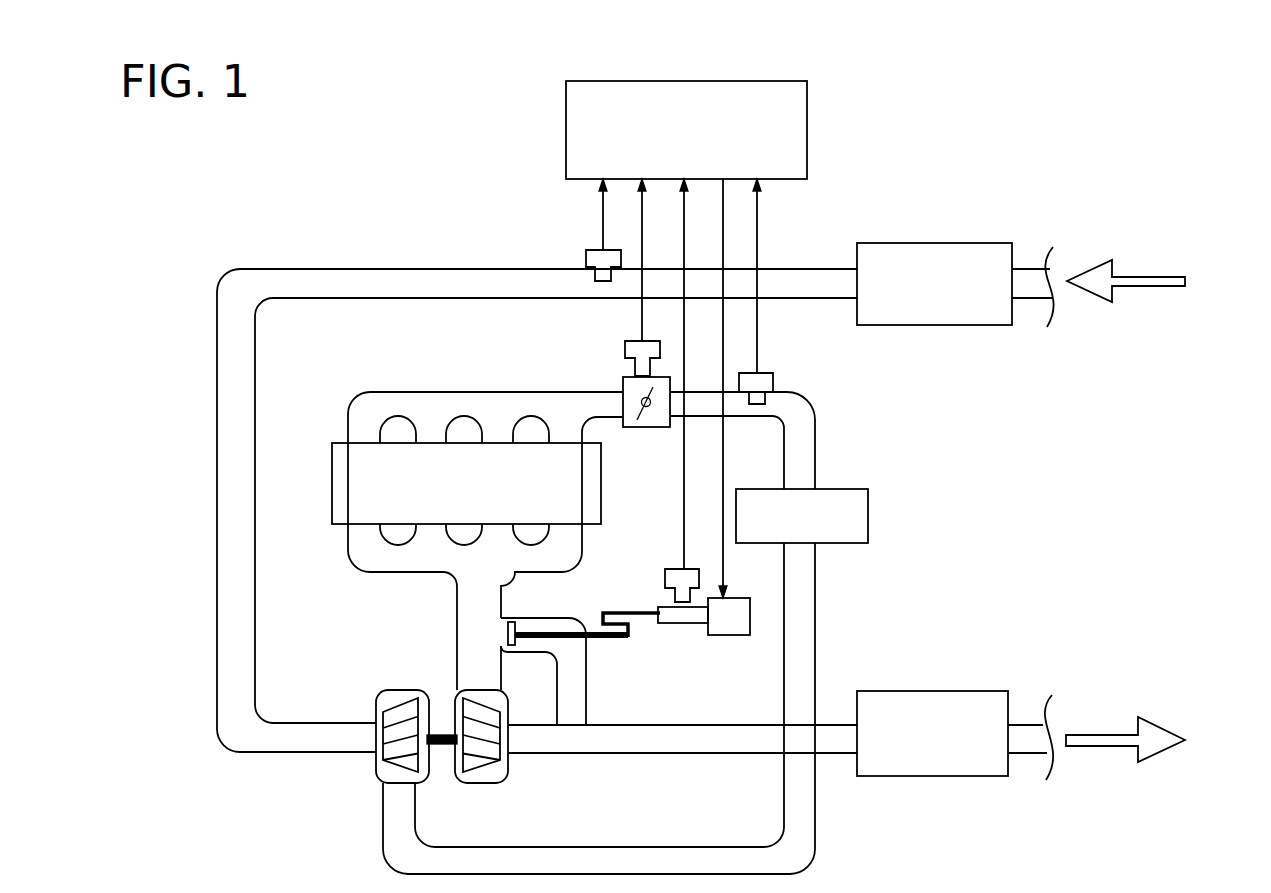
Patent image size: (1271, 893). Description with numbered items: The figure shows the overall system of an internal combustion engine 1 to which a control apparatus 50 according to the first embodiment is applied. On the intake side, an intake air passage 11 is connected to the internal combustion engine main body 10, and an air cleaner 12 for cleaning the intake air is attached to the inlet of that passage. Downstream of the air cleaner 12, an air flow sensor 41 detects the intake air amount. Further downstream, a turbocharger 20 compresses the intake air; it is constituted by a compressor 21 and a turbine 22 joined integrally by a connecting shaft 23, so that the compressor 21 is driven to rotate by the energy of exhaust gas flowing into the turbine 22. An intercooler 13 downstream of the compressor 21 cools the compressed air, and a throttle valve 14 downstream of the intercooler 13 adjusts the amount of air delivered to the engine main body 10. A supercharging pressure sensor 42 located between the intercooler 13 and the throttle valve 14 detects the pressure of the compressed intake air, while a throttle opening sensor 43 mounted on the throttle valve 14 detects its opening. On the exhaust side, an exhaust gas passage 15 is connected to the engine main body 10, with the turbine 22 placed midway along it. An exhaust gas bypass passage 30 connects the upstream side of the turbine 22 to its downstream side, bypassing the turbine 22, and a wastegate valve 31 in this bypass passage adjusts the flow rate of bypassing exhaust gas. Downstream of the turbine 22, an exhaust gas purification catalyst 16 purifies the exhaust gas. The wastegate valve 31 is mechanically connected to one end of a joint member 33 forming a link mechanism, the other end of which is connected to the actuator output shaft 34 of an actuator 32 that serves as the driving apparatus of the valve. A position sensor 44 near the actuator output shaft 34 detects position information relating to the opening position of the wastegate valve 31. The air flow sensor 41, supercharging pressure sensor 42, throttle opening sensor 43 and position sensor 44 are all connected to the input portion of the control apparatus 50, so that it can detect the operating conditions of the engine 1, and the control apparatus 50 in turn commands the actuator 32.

The internal combustion engine 1 is at (366, 187).
The internal combustion engine main body 10 is at (332, 479).
The intake air passage 11 is at (532, 268).
The air cleaner 12 is at (912, 243).
The intercooler 13 is at (868, 503).
The throttle valve 14 is at (635, 427).
The exhaust gas passage 15 is at (670, 755).
The exhaust gas purification catalyst 16 is at (945, 691).
The turbocharger 20 is at (421, 723).
The compressor 21 is at (380, 783).
The turbine 22 is at (463, 784).
The connecting shaft 23 is at (440, 733).
The exhaust gas bypass passage 30 is at (587, 683).
The wastegate valve 31 is at (520, 631).
The actuator 32 is at (733, 636).
The joint member 33 is at (613, 612).
The actuator output shaft 34 is at (688, 624).
The air flow sensor 41 is at (597, 249).
The supercharging pressure sensor 42 is at (775, 378).
The throttle opening sensor 43 is at (625, 350).
The position sensor 44 is at (670, 568).
The control apparatus 50 is at (566, 113).